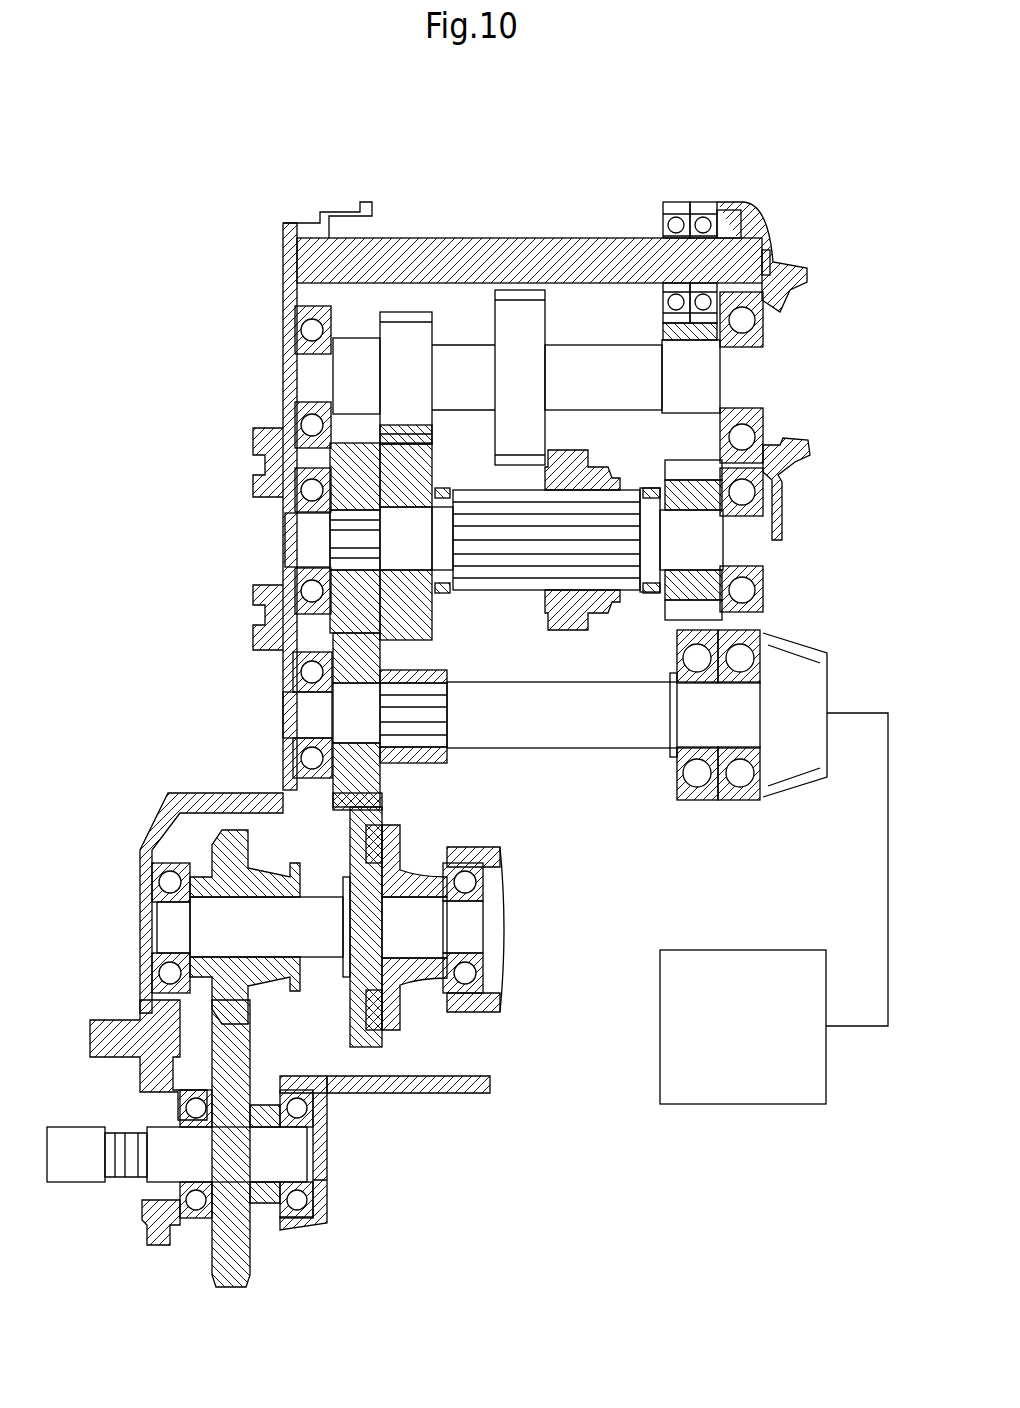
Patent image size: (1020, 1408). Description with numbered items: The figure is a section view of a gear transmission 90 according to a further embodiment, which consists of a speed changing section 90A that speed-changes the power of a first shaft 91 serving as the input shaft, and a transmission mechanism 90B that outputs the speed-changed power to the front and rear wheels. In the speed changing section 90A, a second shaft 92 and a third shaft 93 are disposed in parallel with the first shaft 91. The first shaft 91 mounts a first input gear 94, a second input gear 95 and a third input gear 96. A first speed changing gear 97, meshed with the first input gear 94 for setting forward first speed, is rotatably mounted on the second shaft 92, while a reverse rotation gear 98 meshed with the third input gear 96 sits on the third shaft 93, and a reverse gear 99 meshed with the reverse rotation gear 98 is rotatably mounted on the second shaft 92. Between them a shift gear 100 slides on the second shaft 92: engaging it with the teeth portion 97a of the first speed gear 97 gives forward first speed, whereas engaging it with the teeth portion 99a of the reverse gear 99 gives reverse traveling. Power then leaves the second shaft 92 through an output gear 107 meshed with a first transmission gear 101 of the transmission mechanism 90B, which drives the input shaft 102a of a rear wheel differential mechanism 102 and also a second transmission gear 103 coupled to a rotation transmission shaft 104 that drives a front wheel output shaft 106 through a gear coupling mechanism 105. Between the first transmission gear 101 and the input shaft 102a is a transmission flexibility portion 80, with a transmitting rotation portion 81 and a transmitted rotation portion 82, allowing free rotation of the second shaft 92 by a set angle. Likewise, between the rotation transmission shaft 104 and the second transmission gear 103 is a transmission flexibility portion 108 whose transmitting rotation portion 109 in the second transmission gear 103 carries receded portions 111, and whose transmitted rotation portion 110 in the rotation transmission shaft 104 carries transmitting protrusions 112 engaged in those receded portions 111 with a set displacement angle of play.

The gear transmission 90 is at (803, 114).
The speed changing section 90A is at (212, 232).
The transmission mechanism 90B is at (516, 1052).
The first shaft 91 is at (705, 373).
The second shaft 92 is at (750, 548).
The third shaft 93 is at (612, 250).
The first input gear 94 is at (403, 324).
The second input gear 95 is at (528, 300).
The third input gear 96 is at (668, 336).
The first speed changing gear 97 is at (415, 608).
The teeth portion 97a is at (441, 488).
The reverse rotation gear 98 is at (678, 204).
The reverse gear 99 is at (696, 462).
The teeth portion 99a is at (651, 593).
The shift gear 100 is at (566, 458).
The first transmission gear 101 is at (340, 680).
The rear wheel differential mechanism 102 is at (757, 1105).
The input shaft 102a is at (515, 732).
The second transmission gear 103 is at (355, 818).
The rotation transmission shaft 104 is at (205, 922).
The gear coupling mechanism 105 is at (292, 1044).
The front wheel output shaft 106 is at (78, 1172).
The output gear 107 is at (360, 452).
The transmission flexibility portion 108 is at (414, 850).
The transmitting rotation portion 109 is at (400, 822).
The transmitted rotation portion 110 is at (415, 992).
The receded portions 111 is at (356, 1015).
The transmitting protrusions 112 is at (356, 836).
The transmission flexibility portion 80 is at (447, 672).
The transmitting rotation portion 81 is at (385, 758).
The transmitted rotation portion 82 is at (428, 752).